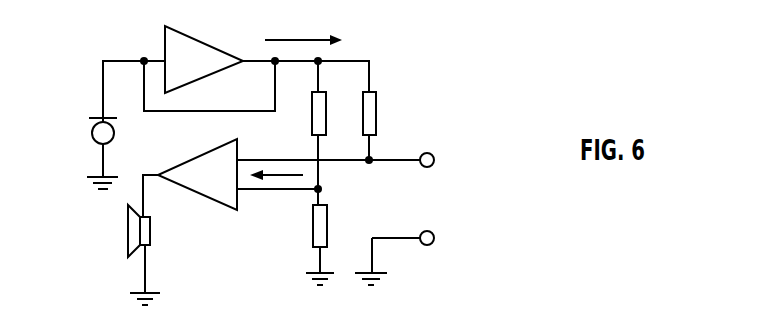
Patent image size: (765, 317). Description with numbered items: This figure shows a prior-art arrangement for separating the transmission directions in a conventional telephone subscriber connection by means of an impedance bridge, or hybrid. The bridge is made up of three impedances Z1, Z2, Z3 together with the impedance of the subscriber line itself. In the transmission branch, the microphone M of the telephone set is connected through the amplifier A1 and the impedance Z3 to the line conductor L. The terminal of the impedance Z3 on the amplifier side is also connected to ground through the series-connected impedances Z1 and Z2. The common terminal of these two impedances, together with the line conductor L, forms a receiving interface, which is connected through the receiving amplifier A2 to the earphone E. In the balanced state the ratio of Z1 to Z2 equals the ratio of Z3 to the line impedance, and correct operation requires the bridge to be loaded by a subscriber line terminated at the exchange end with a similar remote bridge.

The amplifier A1 is at (218, 45).
The receiving amplifier A2 is at (188, 190).
The microphone M is at (91, 131).
The earphone E is at (128, 228).
The impedance Z1 is at (331, 113).
The impedance Z2 is at (333, 226).
The impedance Z3 is at (383, 113).
The line conductor L is at (412, 153).